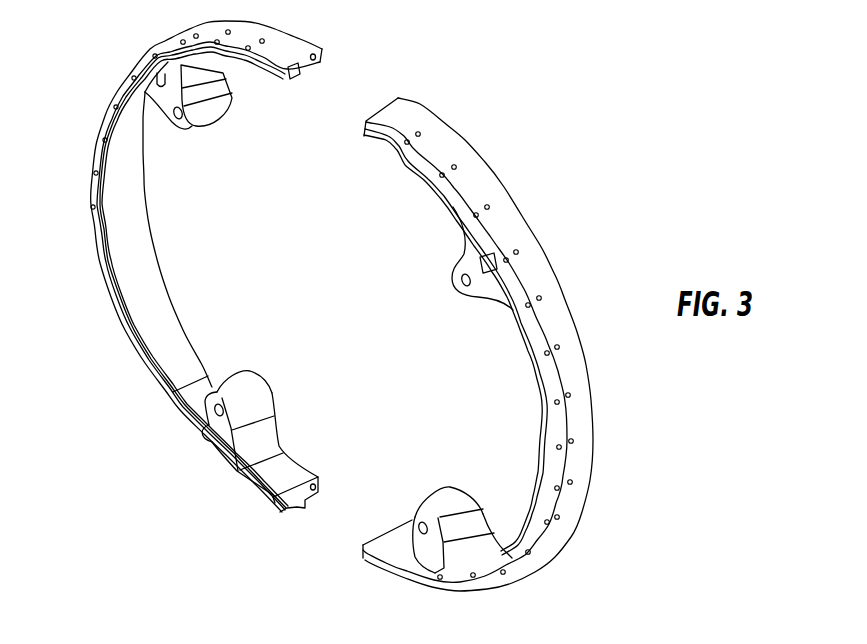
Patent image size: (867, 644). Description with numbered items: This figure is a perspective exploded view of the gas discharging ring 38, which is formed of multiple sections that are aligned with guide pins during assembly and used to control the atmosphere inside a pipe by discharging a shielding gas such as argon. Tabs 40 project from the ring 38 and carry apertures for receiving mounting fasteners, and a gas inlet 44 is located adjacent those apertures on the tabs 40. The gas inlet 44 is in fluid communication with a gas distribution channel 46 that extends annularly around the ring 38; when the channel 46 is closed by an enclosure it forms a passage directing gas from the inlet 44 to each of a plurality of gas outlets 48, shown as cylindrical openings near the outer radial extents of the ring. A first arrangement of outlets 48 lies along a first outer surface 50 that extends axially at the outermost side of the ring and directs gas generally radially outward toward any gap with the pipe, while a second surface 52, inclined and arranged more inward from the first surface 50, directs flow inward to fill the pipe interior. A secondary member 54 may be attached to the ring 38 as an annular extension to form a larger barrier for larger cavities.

The gas discharging ring 38 is at (557, 50).
The tabs 40 is at (455, 288).
The gas inlet 44 is at (217, 448).
The gas distribution channel 46 is at (289, 80).
The gas outlets 48 is at (558, 347).
The first outer surface 50 is at (303, 46).
The second surface 52 is at (378, 120).
The secondary member 54 is at (320, 486).